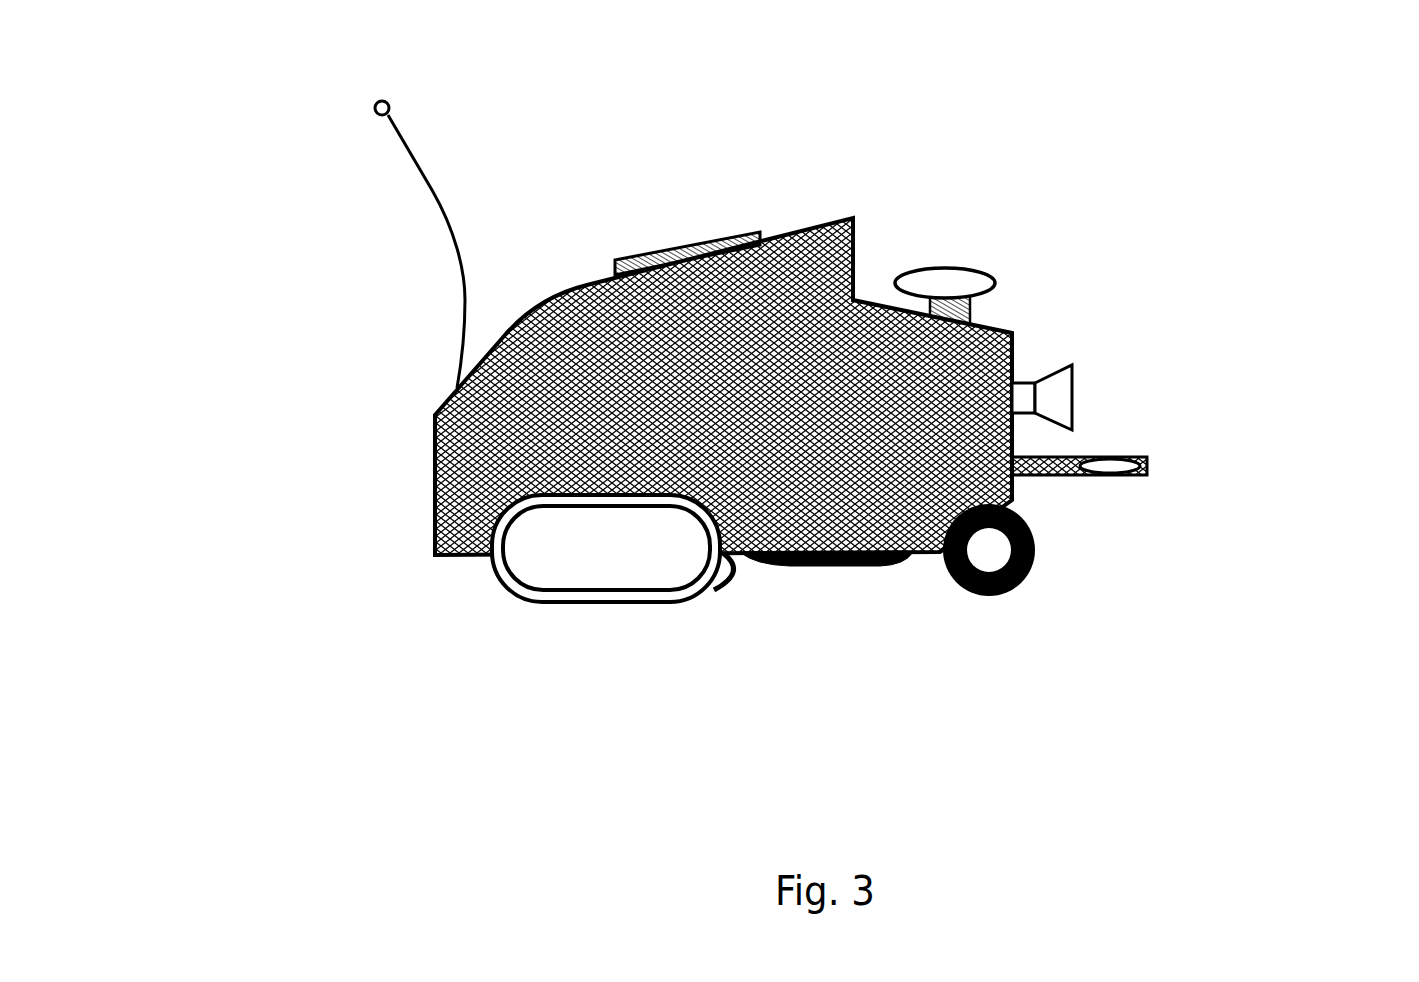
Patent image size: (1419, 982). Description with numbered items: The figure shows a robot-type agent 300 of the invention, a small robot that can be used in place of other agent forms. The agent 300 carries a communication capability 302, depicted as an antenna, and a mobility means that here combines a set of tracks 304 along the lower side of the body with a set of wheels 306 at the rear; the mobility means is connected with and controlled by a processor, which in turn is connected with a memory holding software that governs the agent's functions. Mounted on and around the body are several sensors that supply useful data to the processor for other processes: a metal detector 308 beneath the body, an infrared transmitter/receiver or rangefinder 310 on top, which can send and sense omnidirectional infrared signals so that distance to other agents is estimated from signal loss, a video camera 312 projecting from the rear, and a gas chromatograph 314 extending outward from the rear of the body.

The agent 300 is at (987, 198).
The communication capability 302 is at (430, 190).
The set of tracks 304 is at (607, 603).
The set of wheels 306 is at (1037, 553).
The metal detector 308 is at (867, 563).
The infrared transmitter/receiver or rangefinder 310 is at (995, 284).
The video camera 312 is at (1072, 403).
The gas chromatograph 314 is at (1147, 468).